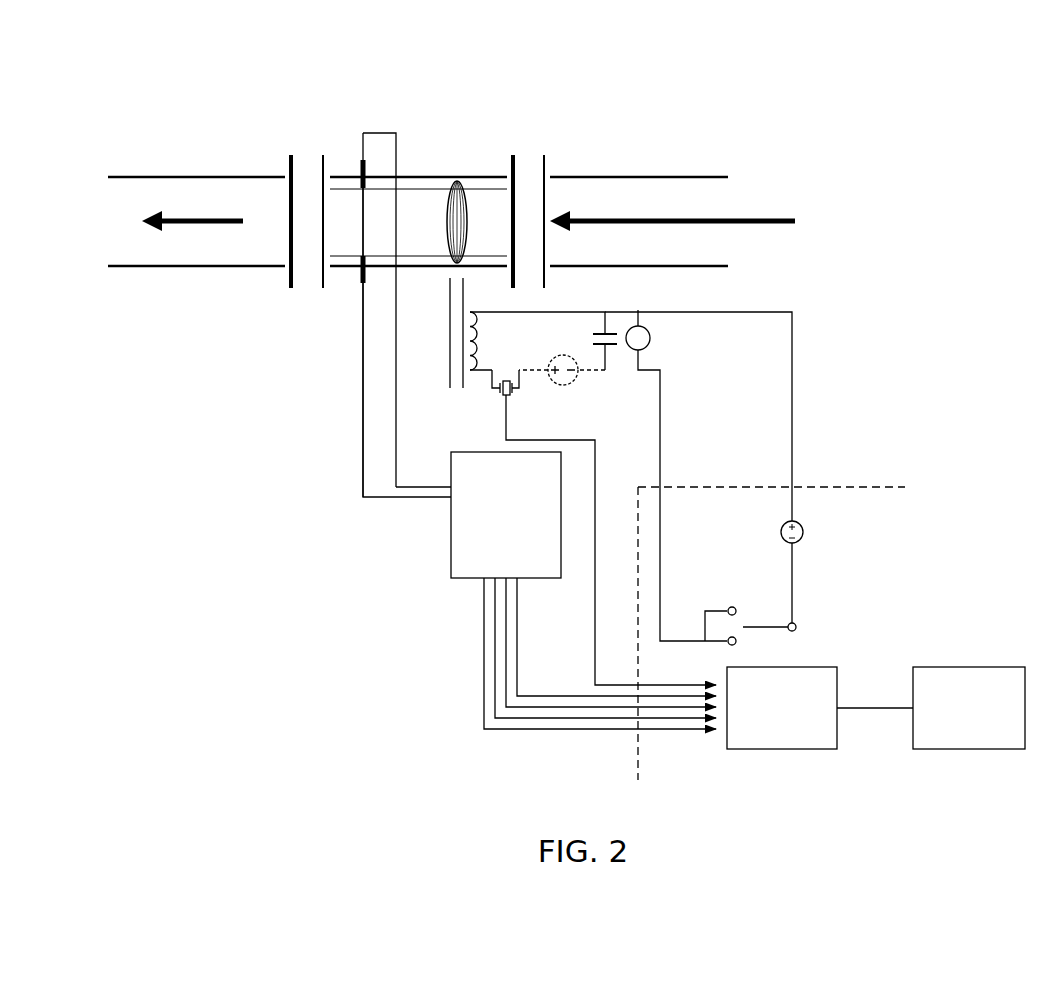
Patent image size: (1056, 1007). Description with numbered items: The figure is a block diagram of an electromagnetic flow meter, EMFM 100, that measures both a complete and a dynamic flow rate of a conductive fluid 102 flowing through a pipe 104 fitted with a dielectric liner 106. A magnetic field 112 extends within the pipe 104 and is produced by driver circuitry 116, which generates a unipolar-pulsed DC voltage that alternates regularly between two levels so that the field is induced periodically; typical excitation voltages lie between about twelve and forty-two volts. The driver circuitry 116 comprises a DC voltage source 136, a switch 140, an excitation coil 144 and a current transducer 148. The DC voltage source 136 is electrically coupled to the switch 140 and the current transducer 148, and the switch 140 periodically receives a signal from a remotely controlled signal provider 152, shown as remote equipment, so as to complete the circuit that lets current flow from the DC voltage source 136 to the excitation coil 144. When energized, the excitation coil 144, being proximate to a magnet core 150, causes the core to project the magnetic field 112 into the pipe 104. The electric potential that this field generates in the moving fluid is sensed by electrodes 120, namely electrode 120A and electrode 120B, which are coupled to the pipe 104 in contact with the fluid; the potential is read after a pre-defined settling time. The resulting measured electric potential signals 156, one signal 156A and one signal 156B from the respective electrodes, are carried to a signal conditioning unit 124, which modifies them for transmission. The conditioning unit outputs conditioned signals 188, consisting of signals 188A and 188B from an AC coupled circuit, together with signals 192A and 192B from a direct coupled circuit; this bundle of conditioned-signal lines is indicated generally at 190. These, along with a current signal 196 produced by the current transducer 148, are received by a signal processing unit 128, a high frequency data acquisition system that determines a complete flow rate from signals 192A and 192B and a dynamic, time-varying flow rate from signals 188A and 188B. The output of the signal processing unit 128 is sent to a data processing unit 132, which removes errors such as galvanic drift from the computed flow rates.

The EMFM 100 is at (720, 118).
The conductive fluid 102 is at (724, 196).
The pipe 104 is at (417, 177).
The dielectric liner 106 is at (473, 183).
The magnetic field 112 is at (462, 222).
The driver circuitry 116 is at (640, 297).
The electrodes 120 is at (342, 148).
The electrode 120A is at (360, 172).
The electrode 120B is at (362, 284).
The signal conditioning unit 124 is at (450, 540).
The signal processing unit 128 is at (778, 749).
The data processing unit 132 is at (938, 749).
The DC voltage source 136 is at (571, 376).
The switch 140 is at (582, 330).
The excitation coil 144 is at (473, 330).
The current transducer 148 is at (476, 407).
The magnet core 150 is at (452, 332).
The remotely controlled signal provider 152 is at (846, 418).
The measured electric potential signals 156 is at (304, 536).
The measured electric potential signal 156A is at (362, 492).
The measured electric potential signal 156B is at (362, 452).
The conditioned signals 188 is at (406, 699).
The conditioned signal 188A is at (483, 620).
The conditioned signal 188B is at (494, 652).
The signal lines 190 is at (534, 668).
The conditioned signal 192A is at (505, 697).
The conditioned signal 192B is at (550, 698).
The current signal 196 is at (596, 476).